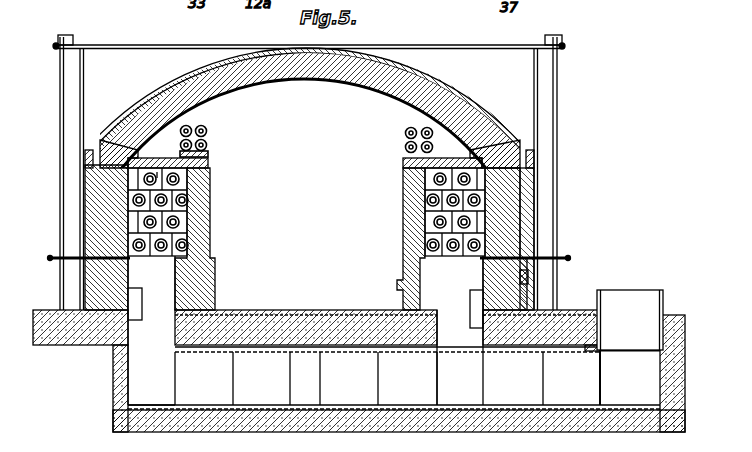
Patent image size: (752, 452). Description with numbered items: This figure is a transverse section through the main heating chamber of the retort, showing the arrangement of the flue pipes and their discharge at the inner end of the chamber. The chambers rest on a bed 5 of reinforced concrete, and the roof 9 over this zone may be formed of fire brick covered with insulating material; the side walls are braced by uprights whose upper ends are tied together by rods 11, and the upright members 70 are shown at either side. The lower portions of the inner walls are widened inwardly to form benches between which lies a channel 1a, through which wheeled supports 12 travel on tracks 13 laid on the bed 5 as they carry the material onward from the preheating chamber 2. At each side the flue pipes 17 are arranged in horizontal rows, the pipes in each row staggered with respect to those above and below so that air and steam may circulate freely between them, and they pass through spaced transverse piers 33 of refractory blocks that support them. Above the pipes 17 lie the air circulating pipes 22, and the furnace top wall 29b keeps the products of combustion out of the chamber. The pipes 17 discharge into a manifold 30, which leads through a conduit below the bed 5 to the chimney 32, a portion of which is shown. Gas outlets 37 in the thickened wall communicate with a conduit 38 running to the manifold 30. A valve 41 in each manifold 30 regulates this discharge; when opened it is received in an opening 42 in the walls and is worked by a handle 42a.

The channel 1a is at (306, 285).
The preheating chamber 2 is at (325, 230).
The bed or foundation 5 is at (311, 316).
The roof 9 is at (312, 80).
The rod 11 is at (135, 48).
The wheeled support or truck 12 is at (437, 222).
The track 13 is at (244, 314).
The flue pipe 17 is at (170, 223).
The air circulating pipe 22 is at (204, 140).
The top wall 29b is at (208, 162).
The discharge manifold or space 30 is at (470, 294).
The chimney 32 is at (622, 292).
The transverse pier 33 is at (157, 172).
The outlet 37 is at (268, 398).
The conduit 38 is at (472, 328).
The valve 41 is at (50, 257).
The opening 42 is at (530, 282).
The handle 42a is at (568, 258).
The upright post 70 is at (62, 118).